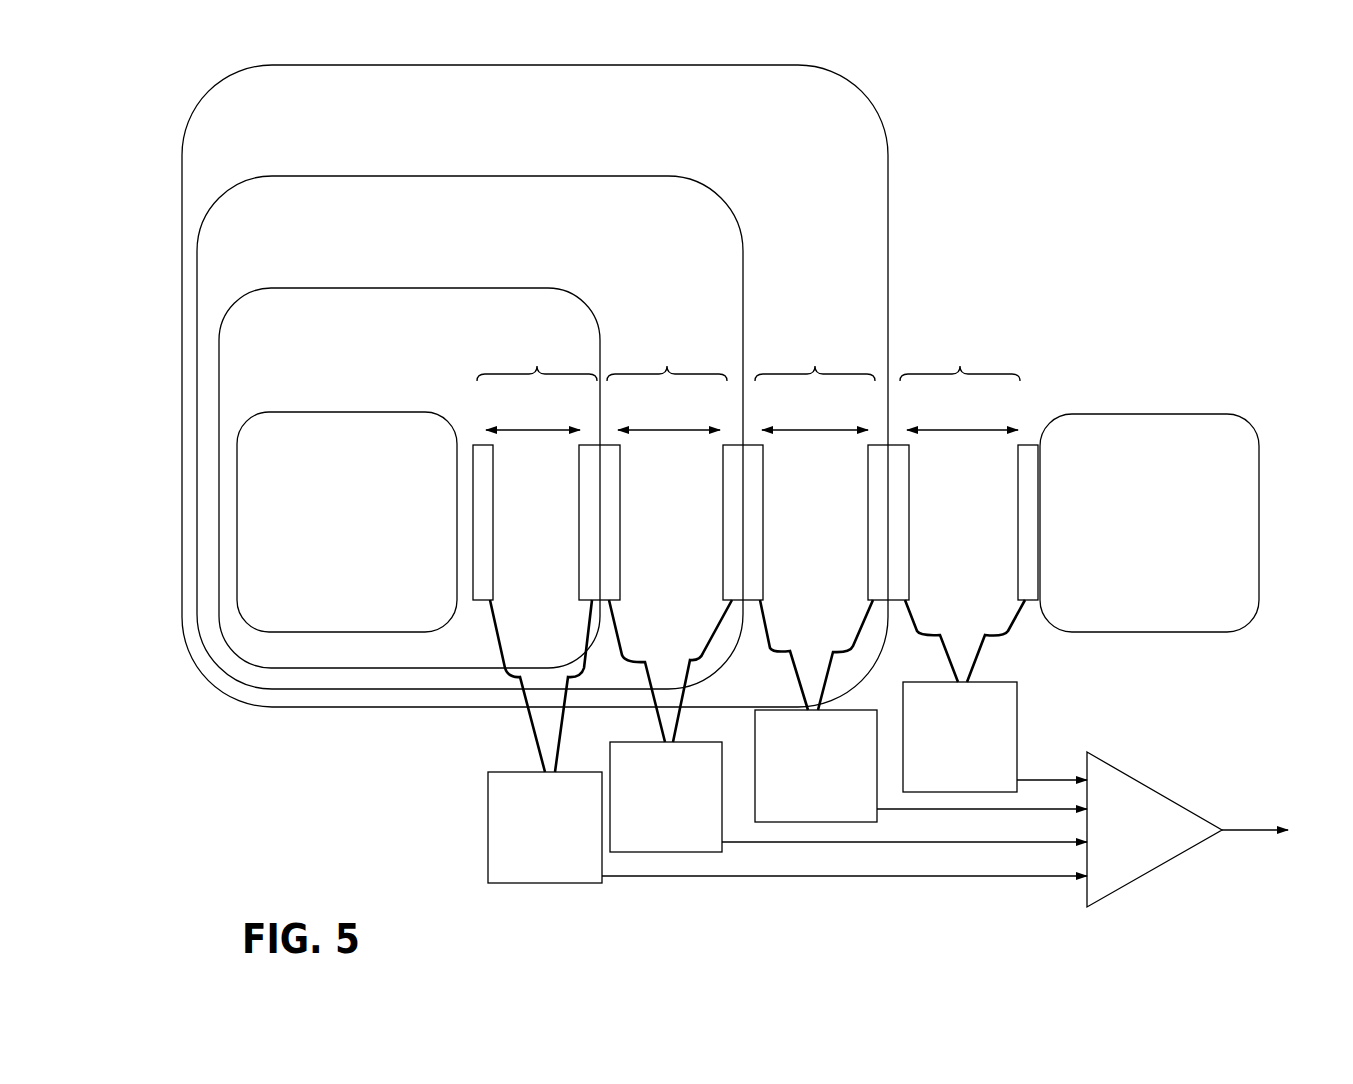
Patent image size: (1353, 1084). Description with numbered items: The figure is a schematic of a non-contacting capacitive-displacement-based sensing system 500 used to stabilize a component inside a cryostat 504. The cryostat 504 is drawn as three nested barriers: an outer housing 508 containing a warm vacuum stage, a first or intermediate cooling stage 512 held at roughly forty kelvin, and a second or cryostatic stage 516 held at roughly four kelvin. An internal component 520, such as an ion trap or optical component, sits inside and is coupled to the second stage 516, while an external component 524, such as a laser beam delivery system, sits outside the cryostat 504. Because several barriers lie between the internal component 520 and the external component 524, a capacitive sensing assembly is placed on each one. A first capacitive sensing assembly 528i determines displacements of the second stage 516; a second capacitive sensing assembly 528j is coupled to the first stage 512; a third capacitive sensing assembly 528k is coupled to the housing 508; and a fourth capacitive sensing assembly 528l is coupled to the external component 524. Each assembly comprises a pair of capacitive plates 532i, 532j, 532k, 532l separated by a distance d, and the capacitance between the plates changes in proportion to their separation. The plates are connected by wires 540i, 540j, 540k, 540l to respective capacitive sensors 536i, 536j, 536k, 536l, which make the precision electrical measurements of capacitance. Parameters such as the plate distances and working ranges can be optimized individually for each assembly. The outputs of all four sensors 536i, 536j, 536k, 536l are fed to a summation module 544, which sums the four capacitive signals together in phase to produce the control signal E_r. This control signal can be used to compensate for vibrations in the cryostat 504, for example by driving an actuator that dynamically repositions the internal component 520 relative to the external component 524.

The capacitive-displacement-based sensing system 500 is at (1053, 95).
The cryostat 504 is at (887, 101).
The housing 508 is at (858, 195).
The first or intermediate cooling stage 512 is at (230, 217).
The second or cryostatic stage 516 is at (240, 358).
The internal component 520 is at (262, 608).
The external component 524 is at (1225, 633).
The first capacitive sensing assembly 528i is at (537, 384).
The second capacitive sensing assembly 528j is at (667, 384).
The third capacitive sensing assembly 528k is at (815, 384).
The fourth capacitive sensing assembly 528l is at (960, 384).
The pair of capacitive plates 532i is at (587, 483).
The pair of capacitive plates 532j is at (725, 483).
The pair of capacitive plates 532k is at (868, 483).
The pair of capacitive plates 532l is at (1018, 483).
The capacitive sensor 536i is at (506, 883).
The capacitive sensor 536j is at (638, 852).
The capacitive sensor 536k is at (858, 822).
The capacitive sensor 536l is at (1017, 742).
The wires 540i is at (528, 730).
The wires 540j is at (680, 723).
The wires 540k is at (808, 705).
The wires 540l is at (980, 648).
The summation module 544 is at (1308, 882).